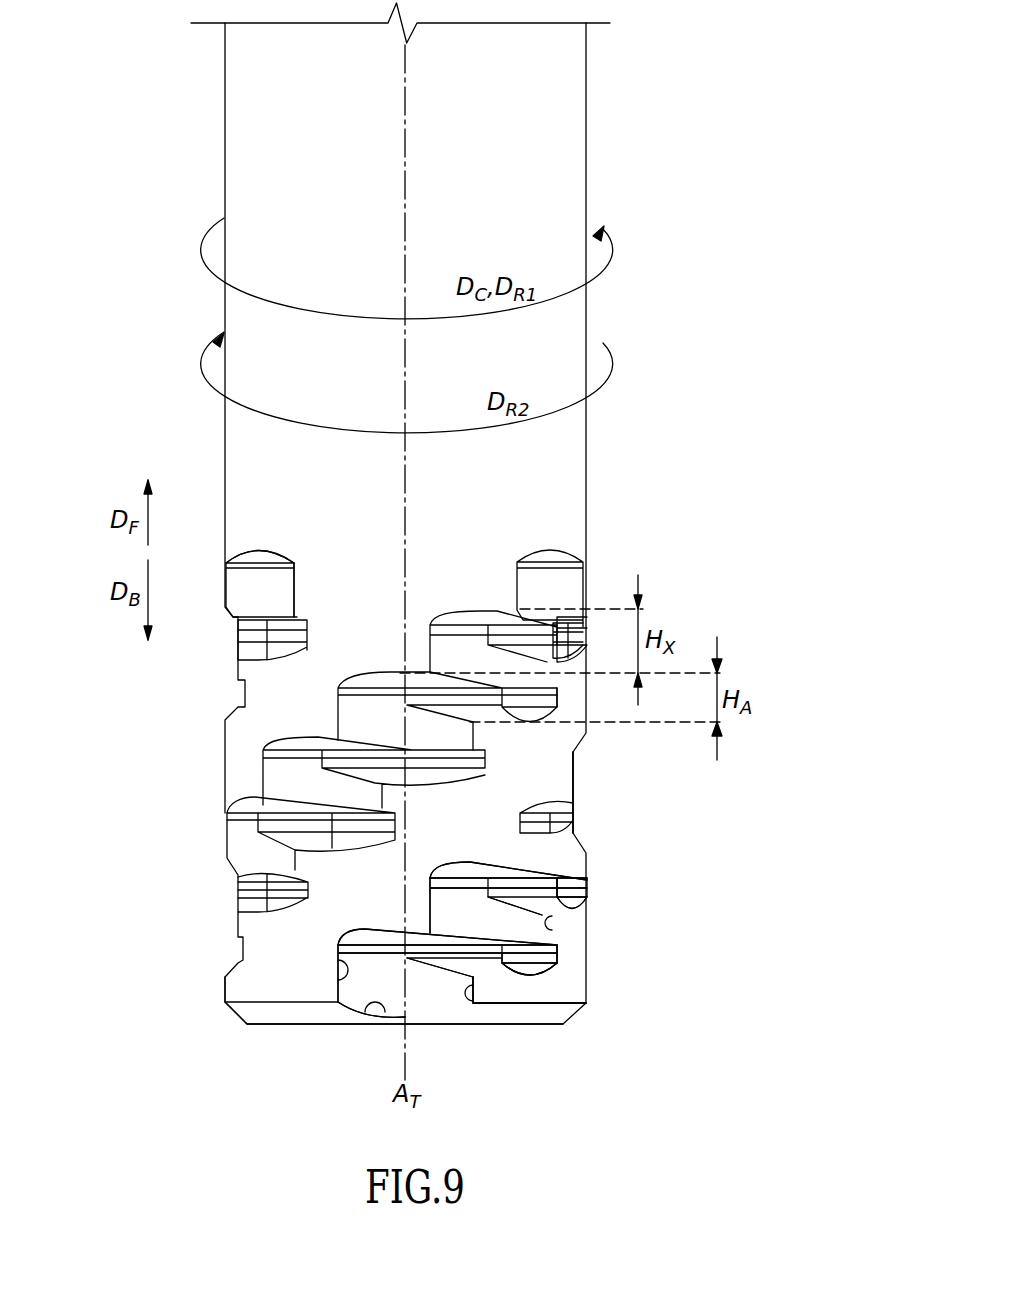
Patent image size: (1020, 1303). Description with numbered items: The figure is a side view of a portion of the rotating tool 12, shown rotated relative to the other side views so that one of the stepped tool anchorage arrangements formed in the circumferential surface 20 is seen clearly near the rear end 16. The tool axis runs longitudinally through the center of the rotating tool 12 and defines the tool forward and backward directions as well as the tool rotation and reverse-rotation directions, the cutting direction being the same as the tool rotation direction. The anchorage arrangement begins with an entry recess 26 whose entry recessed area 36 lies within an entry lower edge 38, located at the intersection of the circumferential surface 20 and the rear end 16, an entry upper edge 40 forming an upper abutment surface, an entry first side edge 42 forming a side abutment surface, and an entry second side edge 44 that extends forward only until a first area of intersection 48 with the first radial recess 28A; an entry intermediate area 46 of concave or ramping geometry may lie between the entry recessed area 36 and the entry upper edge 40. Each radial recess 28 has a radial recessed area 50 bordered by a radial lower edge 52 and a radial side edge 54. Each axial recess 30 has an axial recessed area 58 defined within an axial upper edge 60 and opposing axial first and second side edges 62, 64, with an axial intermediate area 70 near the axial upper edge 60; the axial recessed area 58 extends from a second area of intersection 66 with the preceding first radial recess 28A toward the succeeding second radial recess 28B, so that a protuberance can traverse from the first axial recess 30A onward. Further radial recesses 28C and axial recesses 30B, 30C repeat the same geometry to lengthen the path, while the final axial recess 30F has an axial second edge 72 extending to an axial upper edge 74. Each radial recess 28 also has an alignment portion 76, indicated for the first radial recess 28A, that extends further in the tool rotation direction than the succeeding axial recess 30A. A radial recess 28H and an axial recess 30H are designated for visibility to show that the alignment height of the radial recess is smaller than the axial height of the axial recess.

The rotating tool 12 is at (185, 100).
The rear end 16 is at (278, 1030).
The circumferential surface 20 is at (222, 988).
The entry recess 26 is at (480, 990).
The radial recess 28 is at (571, 942).
The first radial recess 28A is at (529, 969).
The second radial recess 28B is at (590, 885).
The third radial recess 28C is at (580, 810).
The radial recess 28H is at (522, 730).
The axial recess 30 is at (568, 931).
The first axial recess 30A is at (447, 954).
The second axial recess 30B is at (580, 853).
The third axial recess 30C is at (580, 761).
The final axial recess 30F is at (284, 528).
The axial recess 30H is at (453, 612).
The entry recessed area 36 is at (413, 1003).
The entry lower edge 38 is at (385, 1018).
The entry upper edge 40 is at (372, 930).
The entry first side edge 42 is at (333, 978).
The entry second side edge 44 is at (471, 1004).
The entry intermediate area 46 is at (380, 946).
The first area of intersection 48 is at (441, 980).
The radial recessed area 50 is at (445, 951).
The radial lower edge 52 is at (558, 977).
The radial side edge 54 is at (560, 949).
The axial recessed area 58 is at (481, 896).
The axial upper edge 60 is at (471, 887).
The axial first side edge 62 is at (428, 900).
The axial second side edge 64 is at (595, 908).
The second area of intersection 66 is at (485, 935).
The axial intermediate area 70 is at (455, 886).
The axial second edge 72 is at (296, 598).
The axial upper edge 74 is at (248, 545).
The alignment portion 76 is at (568, 728).